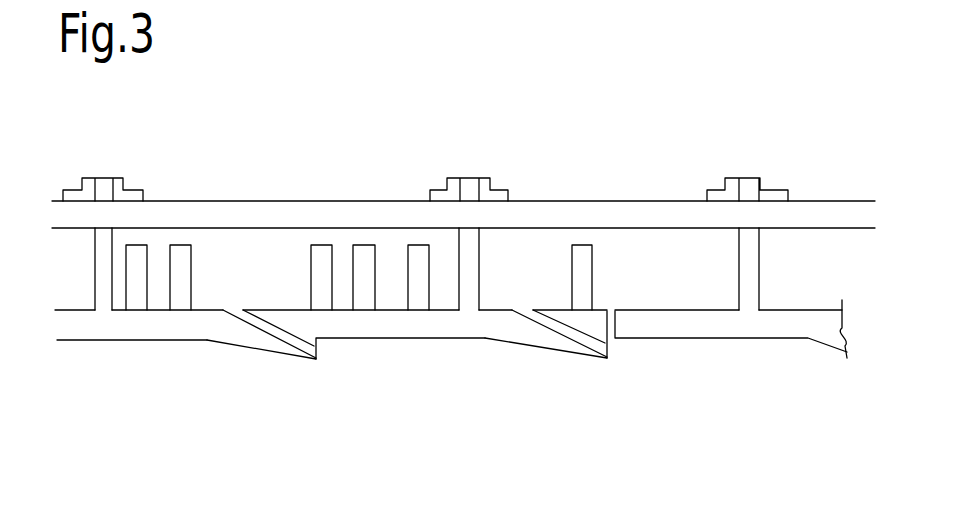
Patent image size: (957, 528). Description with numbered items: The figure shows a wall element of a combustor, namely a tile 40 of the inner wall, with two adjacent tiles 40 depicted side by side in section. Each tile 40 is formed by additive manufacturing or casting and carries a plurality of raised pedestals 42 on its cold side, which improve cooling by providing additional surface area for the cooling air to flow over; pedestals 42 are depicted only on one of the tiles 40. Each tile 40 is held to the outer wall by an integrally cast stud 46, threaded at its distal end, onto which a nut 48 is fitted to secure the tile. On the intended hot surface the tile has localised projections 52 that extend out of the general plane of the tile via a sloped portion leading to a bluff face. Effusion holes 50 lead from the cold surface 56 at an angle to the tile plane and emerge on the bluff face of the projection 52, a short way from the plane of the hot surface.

The tile 40 is at (167, 330).
The raised pedestals 42 is at (183, 279).
The integrally cast stud 46 is at (93, 277).
The nut 48 is at (123, 183).
The effusion holes 50 is at (280, 333).
The localised projections 52 is at (252, 343).
The cold surface 56 is at (270, 309).